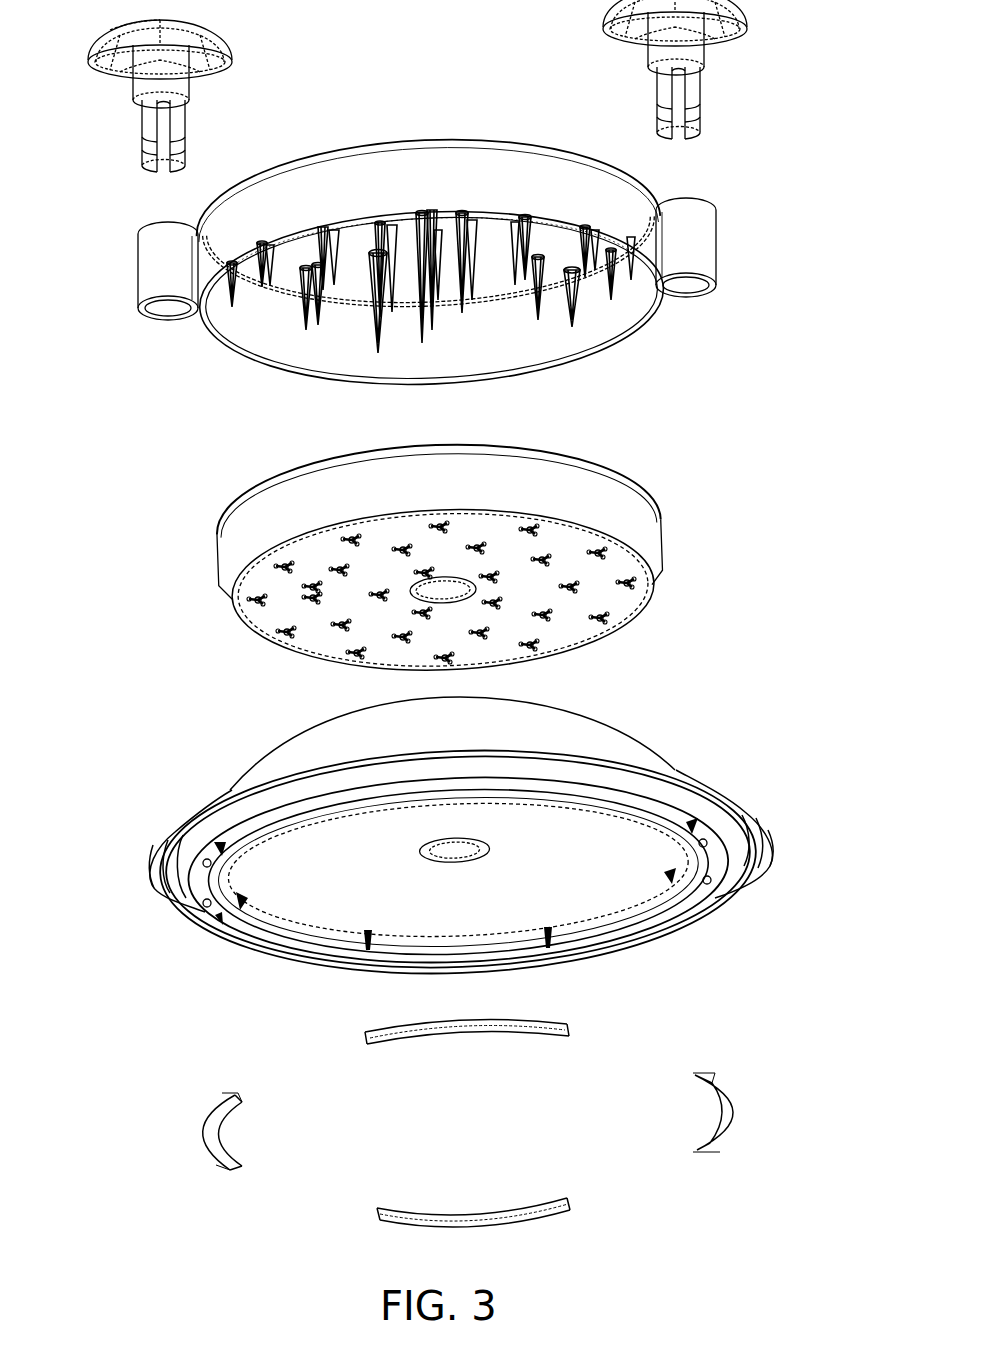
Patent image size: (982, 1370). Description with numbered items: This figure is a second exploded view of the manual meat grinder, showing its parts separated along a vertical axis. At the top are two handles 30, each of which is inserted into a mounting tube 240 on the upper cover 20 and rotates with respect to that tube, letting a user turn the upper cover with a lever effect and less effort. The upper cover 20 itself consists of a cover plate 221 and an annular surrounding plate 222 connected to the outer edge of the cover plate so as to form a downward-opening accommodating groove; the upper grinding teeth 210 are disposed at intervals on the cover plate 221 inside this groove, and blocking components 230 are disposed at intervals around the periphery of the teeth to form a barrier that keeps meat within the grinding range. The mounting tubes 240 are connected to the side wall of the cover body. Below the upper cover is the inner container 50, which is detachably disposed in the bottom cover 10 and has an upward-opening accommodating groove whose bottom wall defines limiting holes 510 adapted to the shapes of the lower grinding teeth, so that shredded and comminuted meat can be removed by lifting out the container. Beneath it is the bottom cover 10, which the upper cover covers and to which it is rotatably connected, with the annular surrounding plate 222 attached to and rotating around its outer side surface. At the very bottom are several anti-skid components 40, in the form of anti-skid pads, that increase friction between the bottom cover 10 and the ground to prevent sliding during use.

The bottom cover 10 is at (708, 953).
The upper cover 20 is at (431, 253).
The handle 30 is at (210, 103).
The anti-skid component 40 is at (725, 1113).
The inner container 50 is at (472, 557).
The upper grinding teeth 210 is at (478, 306).
The cover plate 221 is at (290, 282).
The annular surrounding plate 222 is at (500, 180).
The blocking components 230 is at (578, 313).
The mounting tube 240 is at (145, 256).
The limiting holes 510 is at (615, 622).